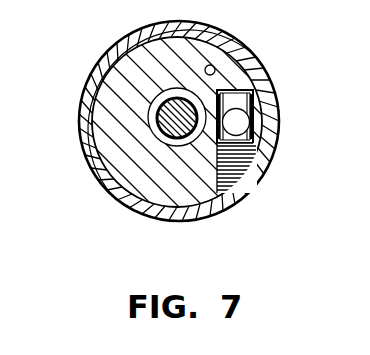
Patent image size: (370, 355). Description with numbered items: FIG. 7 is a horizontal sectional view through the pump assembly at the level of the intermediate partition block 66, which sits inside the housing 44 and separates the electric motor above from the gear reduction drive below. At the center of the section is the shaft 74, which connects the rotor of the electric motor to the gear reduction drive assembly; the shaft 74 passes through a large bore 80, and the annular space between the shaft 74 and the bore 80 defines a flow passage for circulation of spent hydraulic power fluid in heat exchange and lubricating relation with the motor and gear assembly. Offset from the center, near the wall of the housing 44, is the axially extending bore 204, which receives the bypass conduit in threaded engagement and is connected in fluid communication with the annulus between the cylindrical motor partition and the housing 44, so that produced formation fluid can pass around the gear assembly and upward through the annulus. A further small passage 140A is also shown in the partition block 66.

The housing 44 is at (82, 140).
The intermediate partition block 66 is at (115, 88).
The shaft 74 is at (157, 120).
The large bore 80 is at (181, 144).
The small passage 140A is at (214, 66).
The axially extending bore 204 is at (263, 95).